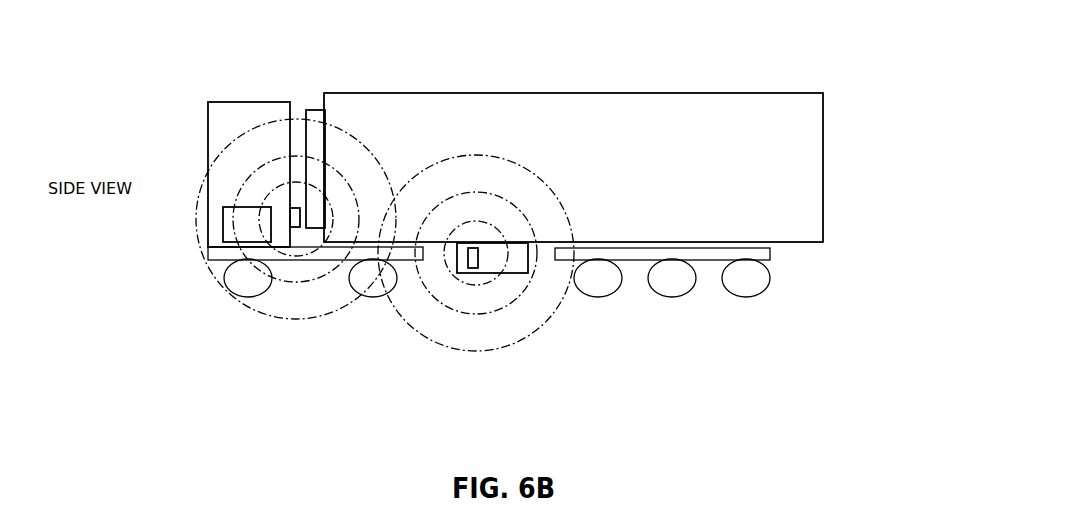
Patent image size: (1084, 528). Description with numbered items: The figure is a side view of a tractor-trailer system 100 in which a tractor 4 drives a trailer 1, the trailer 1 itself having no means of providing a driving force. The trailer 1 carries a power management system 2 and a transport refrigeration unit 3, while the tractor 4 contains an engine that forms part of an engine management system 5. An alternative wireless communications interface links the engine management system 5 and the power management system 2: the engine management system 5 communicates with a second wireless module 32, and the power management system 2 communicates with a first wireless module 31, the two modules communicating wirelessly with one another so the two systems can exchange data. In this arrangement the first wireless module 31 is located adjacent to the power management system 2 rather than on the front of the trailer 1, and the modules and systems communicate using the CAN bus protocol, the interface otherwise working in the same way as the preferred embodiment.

The tractor-trailer system 100 is at (672, 78).
The trailer 1 is at (807, 166).
The tractor 4 is at (233, 132).
The transport refrigeration unit (TRU) 3 is at (315, 148).
The engine management system 5 is at (245, 237).
The second wireless module 32 is at (296, 232).
The power management system 2 is at (513, 268).
The first wireless module 31 is at (475, 263).